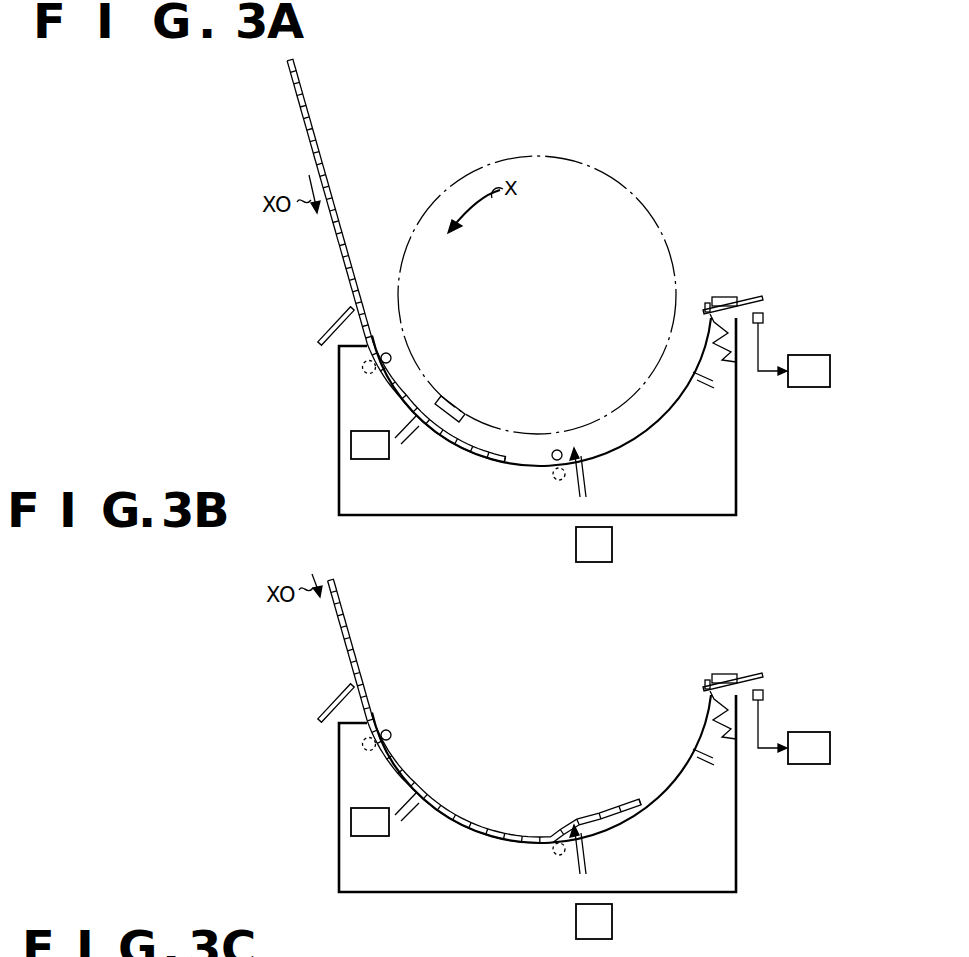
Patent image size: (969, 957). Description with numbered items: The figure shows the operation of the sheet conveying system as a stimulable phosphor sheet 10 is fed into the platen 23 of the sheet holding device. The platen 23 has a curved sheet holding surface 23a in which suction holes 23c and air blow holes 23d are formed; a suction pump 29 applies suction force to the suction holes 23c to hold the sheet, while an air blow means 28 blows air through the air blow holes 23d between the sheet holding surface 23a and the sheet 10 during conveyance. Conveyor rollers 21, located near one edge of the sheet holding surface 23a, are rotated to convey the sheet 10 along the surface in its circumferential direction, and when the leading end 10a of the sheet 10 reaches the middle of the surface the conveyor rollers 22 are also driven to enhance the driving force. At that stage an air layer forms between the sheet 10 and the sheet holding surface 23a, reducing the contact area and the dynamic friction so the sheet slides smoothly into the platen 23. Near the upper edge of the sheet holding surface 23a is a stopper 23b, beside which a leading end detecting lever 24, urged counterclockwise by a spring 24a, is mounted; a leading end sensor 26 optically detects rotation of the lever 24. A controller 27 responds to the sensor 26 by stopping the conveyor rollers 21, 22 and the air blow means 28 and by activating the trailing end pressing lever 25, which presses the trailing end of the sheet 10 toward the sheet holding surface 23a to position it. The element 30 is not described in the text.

In FIG. 3A, the stimulable phosphor sheet 10 is at (336, 236).
In FIG. 3B, the stimulable phosphor sheet 10 is at (338, 622).
In FIG. 3B, the leading end 10a is at (632, 802).
In FIG. 3A, the conveyor rollers 21 is at (384, 363).
In FIG. 3A, the conveyor rollers 22 is at (554, 459).
In FIG. 3A, the platen 23 is at (740, 487).
In FIG. 3B, the platen 23 is at (572, 793).
In FIG. 3A, the sheet holding surface 23a is at (668, 403).
In FIG. 3B, the sheet holding surface 23a is at (541, 769).
In FIG. 3A, the stopper 23b is at (708, 298).
In FIG. 3B, the stopper 23b is at (708, 682).
In FIG. 3A, the suction holes 23c is at (413, 440).
In FIG. 3B, the suction holes 23c is at (412, 812).
In FIG. 3A, the air blow holes 23d is at (589, 486).
In FIG. 3B, the air blow holes 23d is at (589, 850).
In FIG. 3A, the leading end detecting lever 24 is at (755, 297).
In FIG. 3B, the leading end detecting lever 24 is at (754, 674).
In FIG. 3A, the spring 24a is at (736, 352).
In FIG. 3B, the spring 24a is at (738, 730).
In FIG. 3A, the trailing end pressing lever 25 is at (345, 308).
In FIG. 3B, the trailing end pressing lever 25 is at (345, 685).
In FIG. 3A, the leading end sensor 26 is at (765, 318).
In FIG. 3B, the leading end sensor 26 is at (767, 694).
In FIG. 3A, the controller 27 is at (794, 355).
In FIG. 3B, the controller 27 is at (794, 732).
In FIG. 3A, the air blow means 28 is at (594, 544).
In FIG. 3B, the air blow means 28 is at (594, 921).
In FIG. 3A, the suction pump 29 is at (370, 445).
In FIG. 3B, the suction pump 29 is at (370, 822).
In FIG. 3A, the drum 30 is at (632, 186).